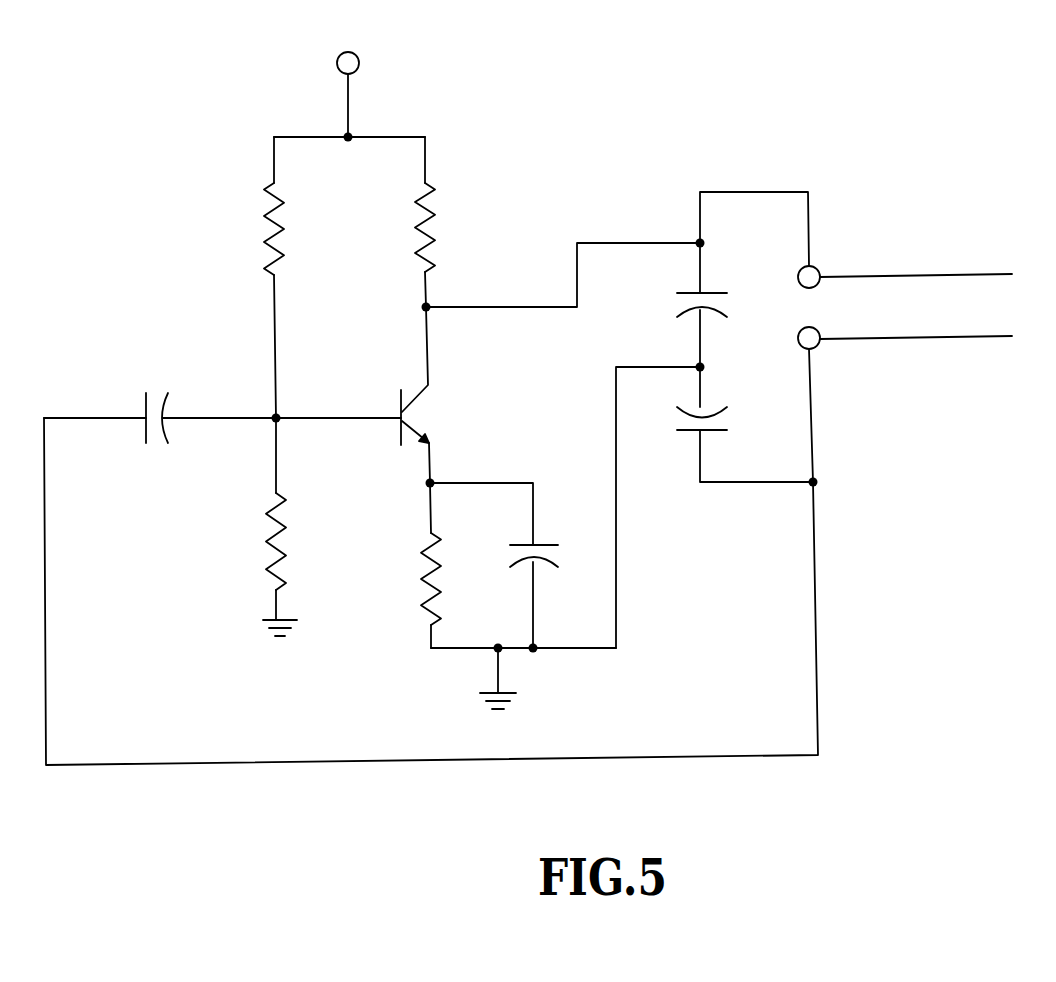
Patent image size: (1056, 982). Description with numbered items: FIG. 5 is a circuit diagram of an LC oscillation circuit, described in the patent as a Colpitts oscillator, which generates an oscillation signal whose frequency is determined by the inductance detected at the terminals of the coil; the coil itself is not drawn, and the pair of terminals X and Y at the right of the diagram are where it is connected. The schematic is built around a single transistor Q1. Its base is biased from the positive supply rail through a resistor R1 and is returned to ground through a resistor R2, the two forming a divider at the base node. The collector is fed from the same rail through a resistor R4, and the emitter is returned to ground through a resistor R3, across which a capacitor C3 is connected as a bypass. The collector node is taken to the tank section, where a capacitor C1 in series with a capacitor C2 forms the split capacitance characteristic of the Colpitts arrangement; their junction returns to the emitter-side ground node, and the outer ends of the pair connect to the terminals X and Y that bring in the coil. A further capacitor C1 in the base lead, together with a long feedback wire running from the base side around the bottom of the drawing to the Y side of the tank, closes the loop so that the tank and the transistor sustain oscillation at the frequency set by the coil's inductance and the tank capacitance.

The bias resistor R1 is at (258, 277).
The bias resistor R2 is at (290, 527).
The emitter resistor R3 is at (445, 565).
The collector load resistor R4 is at (441, 222).
The capacitor C1 is at (404, 343).
The capacitor C2 is at (745, 424).
The emitter bypass capacitor C3 is at (513, 565).
The transistor Q1 is at (431, 395).
The output terminal X is at (924, 276).
The output terminal Y is at (923, 338).